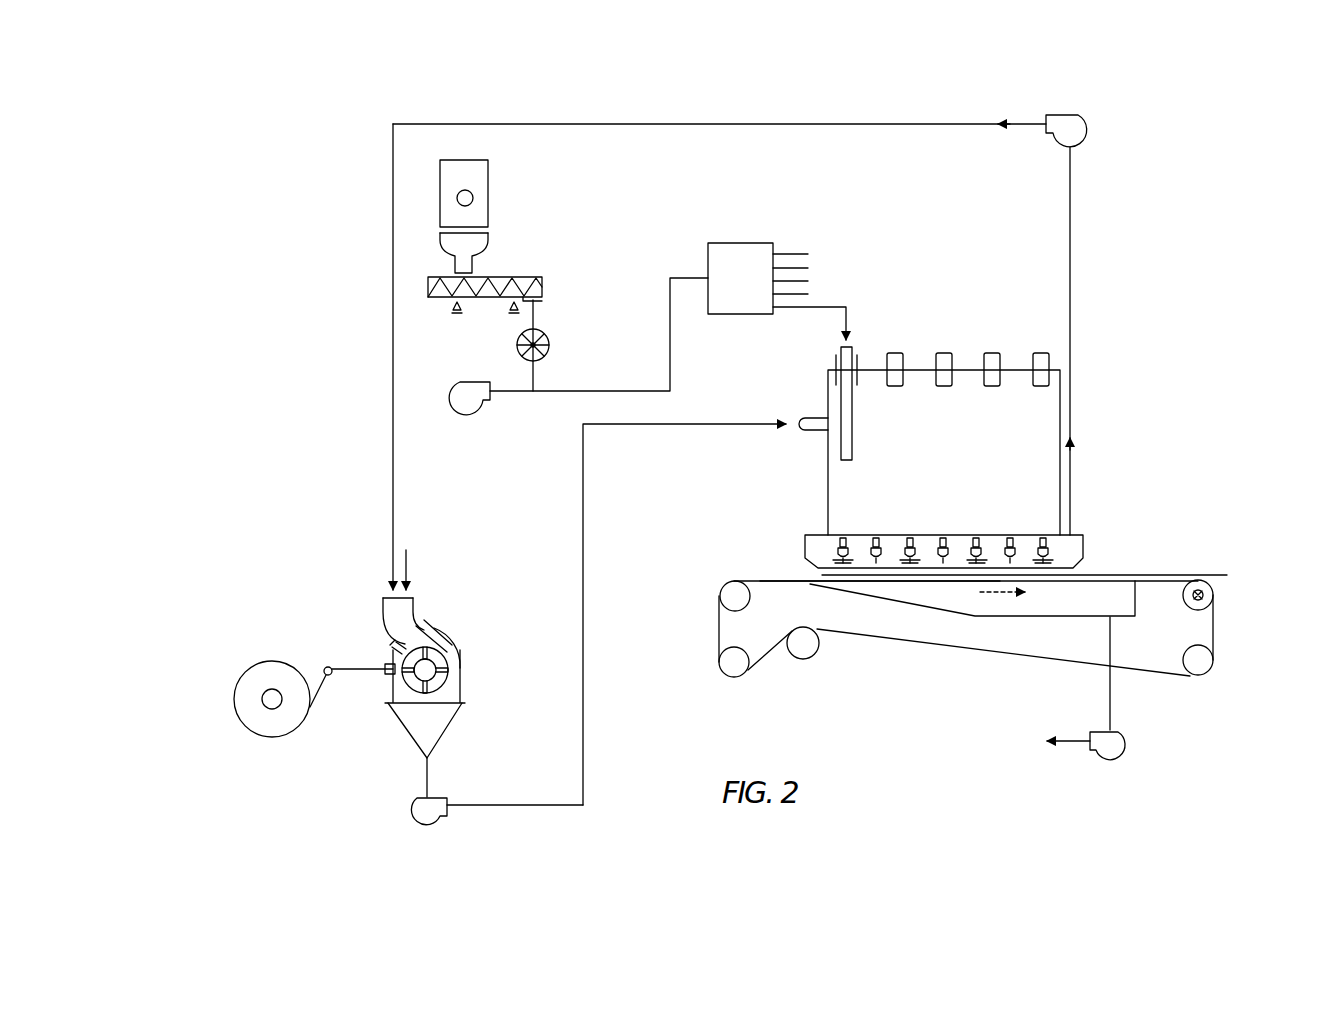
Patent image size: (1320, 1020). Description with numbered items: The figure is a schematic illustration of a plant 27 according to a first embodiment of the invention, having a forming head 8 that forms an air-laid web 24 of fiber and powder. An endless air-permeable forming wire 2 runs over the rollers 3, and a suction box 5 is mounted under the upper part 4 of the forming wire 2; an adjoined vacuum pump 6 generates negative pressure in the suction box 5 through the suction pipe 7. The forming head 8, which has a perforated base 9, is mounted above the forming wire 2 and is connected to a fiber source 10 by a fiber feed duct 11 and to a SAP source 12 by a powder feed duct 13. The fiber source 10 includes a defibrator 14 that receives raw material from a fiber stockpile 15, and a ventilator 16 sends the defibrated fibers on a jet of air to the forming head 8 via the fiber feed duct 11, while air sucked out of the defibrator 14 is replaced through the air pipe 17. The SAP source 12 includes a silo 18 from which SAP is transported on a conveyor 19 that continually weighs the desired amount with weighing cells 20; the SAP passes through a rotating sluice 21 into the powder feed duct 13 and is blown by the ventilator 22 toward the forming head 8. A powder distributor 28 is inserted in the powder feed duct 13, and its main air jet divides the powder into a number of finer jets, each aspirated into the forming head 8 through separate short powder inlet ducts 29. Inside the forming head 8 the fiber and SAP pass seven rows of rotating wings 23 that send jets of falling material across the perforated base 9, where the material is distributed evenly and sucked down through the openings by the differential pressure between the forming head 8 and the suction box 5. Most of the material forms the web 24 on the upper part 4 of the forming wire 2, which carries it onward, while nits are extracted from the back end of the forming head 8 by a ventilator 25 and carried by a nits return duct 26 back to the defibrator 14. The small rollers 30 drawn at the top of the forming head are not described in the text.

The forming wire 2 is at (1215, 632).
The rollers 3 is at (720, 590).
The upper part of the forming wire 4 is at (788, 580).
The suction box 5 is at (942, 599).
The vacuum pump 6 is at (1113, 757).
The suction pipe 7 is at (1110, 700).
The forming head 8 is at (1040, 458).
The perforated base 9 is at (1067, 562).
The fiber source 10 is at (388, 745).
The fiber feed duct 11 is at (688, 428).
The SAP source 12 is at (516, 255).
The powder feed duct 13 is at (553, 390).
The defibrator 14 is at (468, 655).
The fiber stockpile 15 is at (245, 668).
The ventilator 16 is at (437, 827).
The air pipe 17 is at (410, 588).
The silo 18 is at (452, 166).
The conveyor 19 is at (428, 288).
The weighing cells 20 is at (455, 317).
The rotating sluice 21 is at (553, 335).
The ventilator 22 is at (478, 415).
The rotating wings 23 is at (915, 532).
The web 24 is at (1200, 578).
The ventilator 25 is at (1085, 127).
The nits return duct 26 is at (773, 124).
The plant 27 is at (899, 322).
The powder distributor 28 is at (760, 313).
The powder inlet ducts 29 is at (843, 438).
The rollers 30 is at (992, 356).